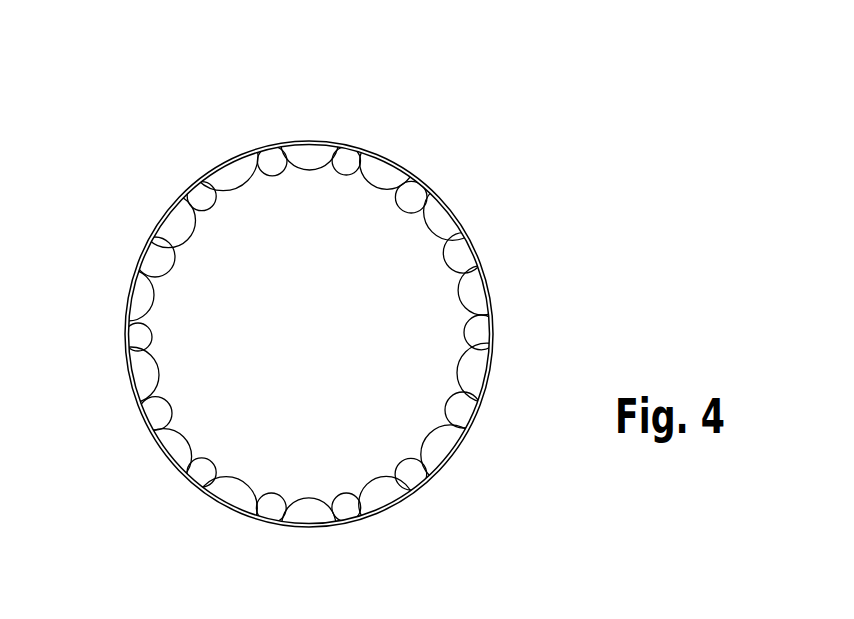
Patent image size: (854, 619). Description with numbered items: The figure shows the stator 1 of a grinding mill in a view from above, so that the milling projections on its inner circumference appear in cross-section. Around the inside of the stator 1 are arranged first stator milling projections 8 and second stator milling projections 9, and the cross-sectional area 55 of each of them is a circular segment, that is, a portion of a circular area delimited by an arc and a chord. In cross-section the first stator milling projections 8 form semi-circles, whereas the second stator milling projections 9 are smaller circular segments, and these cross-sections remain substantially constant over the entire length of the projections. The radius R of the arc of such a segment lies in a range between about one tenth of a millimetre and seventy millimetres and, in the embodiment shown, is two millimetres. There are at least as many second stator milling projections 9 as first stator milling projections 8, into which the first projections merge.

The stator 1 is at (320, 128).
The cross-sectional area 55 is at (383, 173).
The second stator milling projections 9 is at (463, 252).
The first stator milling projections 8 is at (475, 370).
The radius R is at (210, 307).